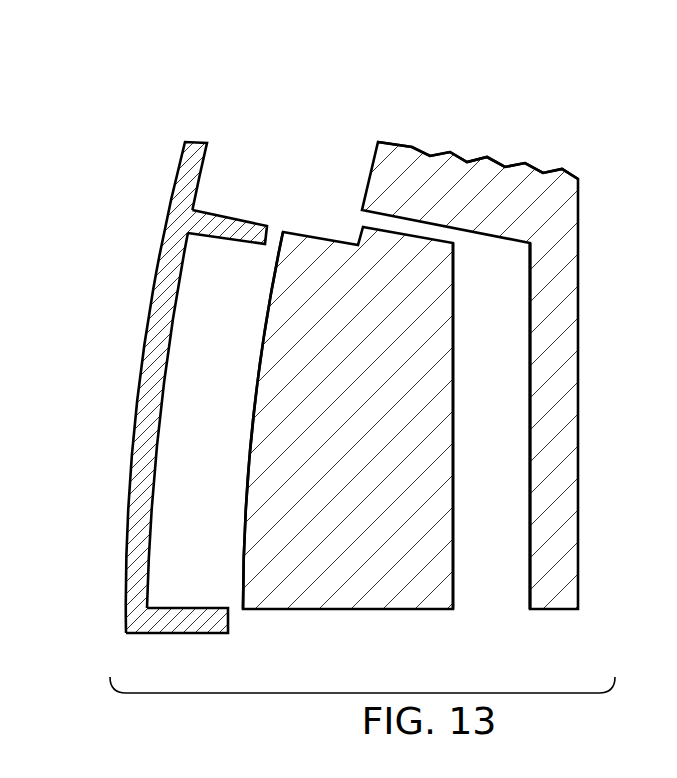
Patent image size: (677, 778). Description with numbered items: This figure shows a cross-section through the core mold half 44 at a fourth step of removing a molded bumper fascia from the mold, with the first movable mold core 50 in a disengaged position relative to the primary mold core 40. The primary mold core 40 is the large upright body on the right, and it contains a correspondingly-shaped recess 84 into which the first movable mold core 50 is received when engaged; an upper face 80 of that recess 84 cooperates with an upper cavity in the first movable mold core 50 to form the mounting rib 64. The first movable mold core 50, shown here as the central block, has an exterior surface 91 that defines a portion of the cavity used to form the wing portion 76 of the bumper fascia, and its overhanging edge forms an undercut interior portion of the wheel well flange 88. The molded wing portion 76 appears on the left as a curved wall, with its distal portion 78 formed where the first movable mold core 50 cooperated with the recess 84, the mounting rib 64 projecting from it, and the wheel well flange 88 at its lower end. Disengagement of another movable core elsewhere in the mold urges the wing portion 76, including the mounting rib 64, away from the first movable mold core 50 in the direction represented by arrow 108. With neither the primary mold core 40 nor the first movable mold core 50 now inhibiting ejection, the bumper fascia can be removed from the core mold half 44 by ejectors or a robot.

The primary mold core 40 is at (578, 238).
The core mold half 44 is at (561, 119).
The first movable mold core 50 is at (382, 612).
The mounting rib 64 is at (214, 215).
The wing portion 76 is at (178, 173).
The distal portion 78 is at (140, 400).
The upper face 80 is at (489, 250).
The recess 84 is at (509, 429).
The wheel well flange 88 is at (163, 622).
The exterior surface 91 is at (250, 448).
The arrow 108 is at (243, 646).